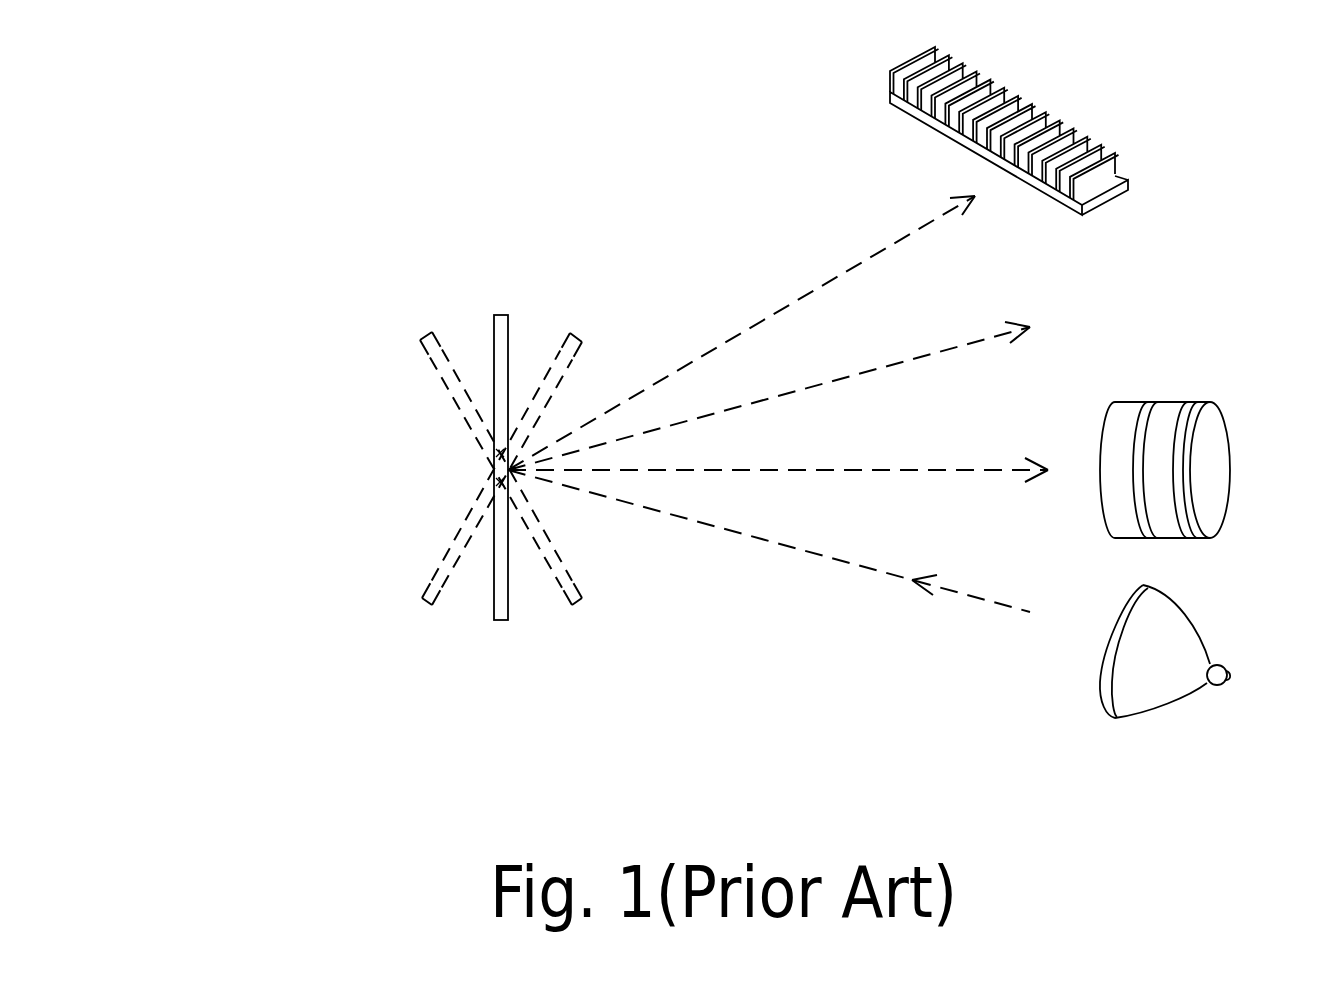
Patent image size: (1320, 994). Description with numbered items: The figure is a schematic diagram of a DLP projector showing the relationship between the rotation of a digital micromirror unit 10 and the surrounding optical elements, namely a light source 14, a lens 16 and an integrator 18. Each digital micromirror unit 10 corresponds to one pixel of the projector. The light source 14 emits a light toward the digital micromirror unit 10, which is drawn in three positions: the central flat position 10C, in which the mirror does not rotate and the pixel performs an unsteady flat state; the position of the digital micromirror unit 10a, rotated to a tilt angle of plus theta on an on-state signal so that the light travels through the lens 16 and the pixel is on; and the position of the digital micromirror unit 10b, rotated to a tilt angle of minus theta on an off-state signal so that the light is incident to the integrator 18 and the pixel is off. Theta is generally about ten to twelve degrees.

The digital micromirror unit 10 is at (375, 293).
The center polarizer plate 10C is at (502, 315).
The digital micromirror unit at tilt angle (−θ) 10b is at (453, 399).
The digital micromirror unit at tilt angle (+θ) 10a is at (423, 600).
The integrator 18 is at (1023, 103).
The lens 16 is at (1223, 413).
The light source 14 is at (1213, 650).